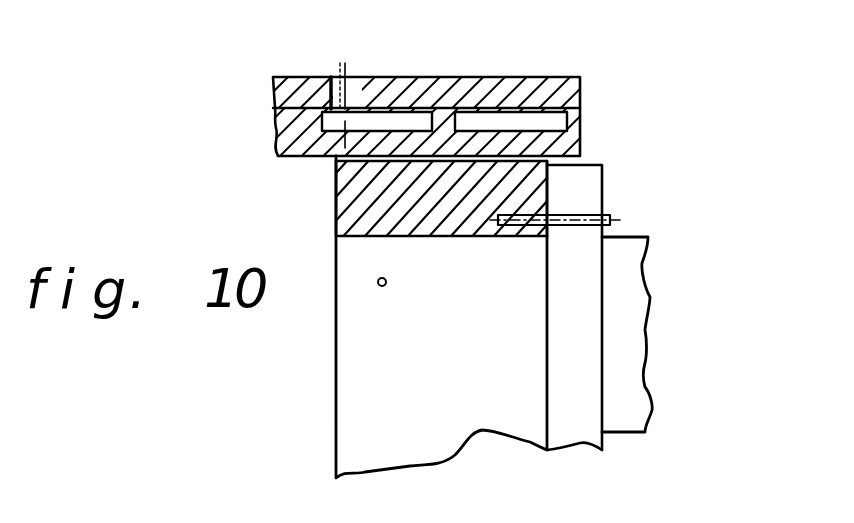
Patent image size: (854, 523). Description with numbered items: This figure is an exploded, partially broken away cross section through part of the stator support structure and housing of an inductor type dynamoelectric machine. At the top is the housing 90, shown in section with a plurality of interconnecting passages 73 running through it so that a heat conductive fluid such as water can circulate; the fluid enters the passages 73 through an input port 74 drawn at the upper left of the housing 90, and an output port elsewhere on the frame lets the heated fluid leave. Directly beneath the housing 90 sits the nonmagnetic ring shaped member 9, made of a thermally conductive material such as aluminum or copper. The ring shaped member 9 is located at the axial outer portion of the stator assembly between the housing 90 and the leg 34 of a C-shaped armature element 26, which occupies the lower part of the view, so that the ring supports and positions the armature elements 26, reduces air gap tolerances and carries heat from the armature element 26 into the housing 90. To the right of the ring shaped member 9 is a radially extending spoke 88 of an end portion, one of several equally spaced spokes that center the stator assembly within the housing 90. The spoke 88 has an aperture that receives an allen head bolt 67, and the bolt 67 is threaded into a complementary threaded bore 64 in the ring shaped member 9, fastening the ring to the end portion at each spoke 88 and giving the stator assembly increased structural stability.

The ring shaped member 9 is at (345, 200).
The C-shaped armature element 26 is at (637, 348).
The leg of the C-shaped armature element 34 is at (350, 374).
The threaded bore 64 is at (515, 203).
The allen head bolt 67 is at (612, 220).
The interconnecting passages 73 is at (443, 110).
The input port 74 is at (330, 77).
The spoke 88 is at (590, 185).
The housing 90 is at (410, 127).